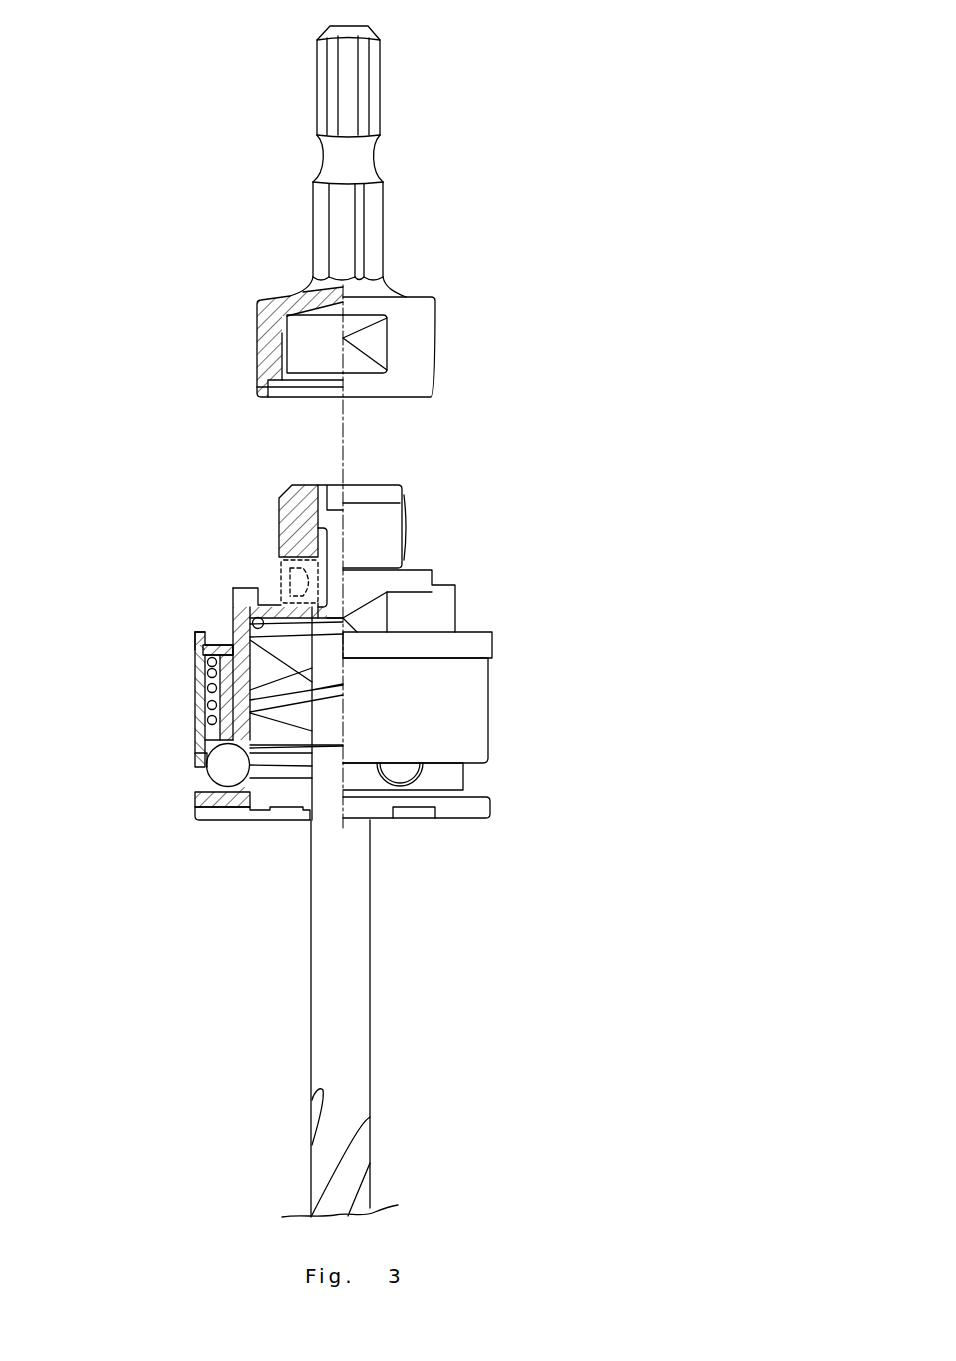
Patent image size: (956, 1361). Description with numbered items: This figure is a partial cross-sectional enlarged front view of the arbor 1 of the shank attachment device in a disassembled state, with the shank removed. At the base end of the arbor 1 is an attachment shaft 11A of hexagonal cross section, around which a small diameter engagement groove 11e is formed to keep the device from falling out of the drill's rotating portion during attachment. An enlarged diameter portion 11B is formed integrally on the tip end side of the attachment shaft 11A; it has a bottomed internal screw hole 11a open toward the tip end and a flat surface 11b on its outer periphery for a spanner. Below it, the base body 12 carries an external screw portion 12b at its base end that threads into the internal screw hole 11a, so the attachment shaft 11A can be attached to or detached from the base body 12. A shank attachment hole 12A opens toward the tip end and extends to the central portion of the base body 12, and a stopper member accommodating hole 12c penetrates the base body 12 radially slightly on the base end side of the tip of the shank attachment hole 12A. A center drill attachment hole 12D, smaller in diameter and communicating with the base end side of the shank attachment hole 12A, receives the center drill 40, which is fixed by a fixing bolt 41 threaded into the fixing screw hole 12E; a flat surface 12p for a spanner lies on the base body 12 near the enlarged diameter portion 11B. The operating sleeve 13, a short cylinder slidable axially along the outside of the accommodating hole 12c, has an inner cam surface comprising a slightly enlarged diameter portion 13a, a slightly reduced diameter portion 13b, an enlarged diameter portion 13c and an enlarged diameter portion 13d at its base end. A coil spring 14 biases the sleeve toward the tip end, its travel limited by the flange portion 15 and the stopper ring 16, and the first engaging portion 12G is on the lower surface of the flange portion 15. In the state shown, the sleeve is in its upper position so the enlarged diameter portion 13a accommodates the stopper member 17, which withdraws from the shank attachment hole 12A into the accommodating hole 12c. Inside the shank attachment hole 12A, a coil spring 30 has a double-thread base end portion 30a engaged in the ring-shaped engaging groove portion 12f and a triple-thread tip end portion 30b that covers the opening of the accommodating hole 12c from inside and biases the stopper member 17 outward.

The arbor 1 is at (588, 412).
The attachment shaft 11A is at (378, 77).
The engagement groove 11e is at (366, 158).
The enlarged diameter portion 11B is at (436, 327).
The flat surface 11b is at (388, 346).
The internal screw hole 11a is at (288, 338).
The base body 12 is at (451, 608).
The shank attachment hole 12A is at (299, 672).
The center drill attachment hole 12D is at (316, 542).
The fixing screw hole 12E is at (318, 568).
The external screw portion 12b is at (280, 520).
The stopper member accommodating hole 12c is at (244, 745).
The engaging groove portion 12f is at (298, 612).
The flat surface 12p is at (371, 605).
The first engaging portion 12G is at (453, 812).
The operating sleeve 13 is at (90, 638).
The slightly enlarged diameter portion 13a is at (203, 760).
The slightly reduced diameter portion 13b is at (206, 740).
The enlarged diameter portion 13c is at (204, 703).
The enlarged diameter portion 13d is at (194, 642).
The coil spring 14 is at (221, 668).
The flange portion 15 is at (194, 798).
The stopper ring 16 is at (204, 650).
The stopper member 17 is at (216, 770).
The coil spring 30 is at (324, 697).
The base end portion 30a is at (282, 628).
The tip end portion 30b is at (287, 767).
The center drill 40 is at (361, 1022).
The fixing bolt 41 is at (319, 583).